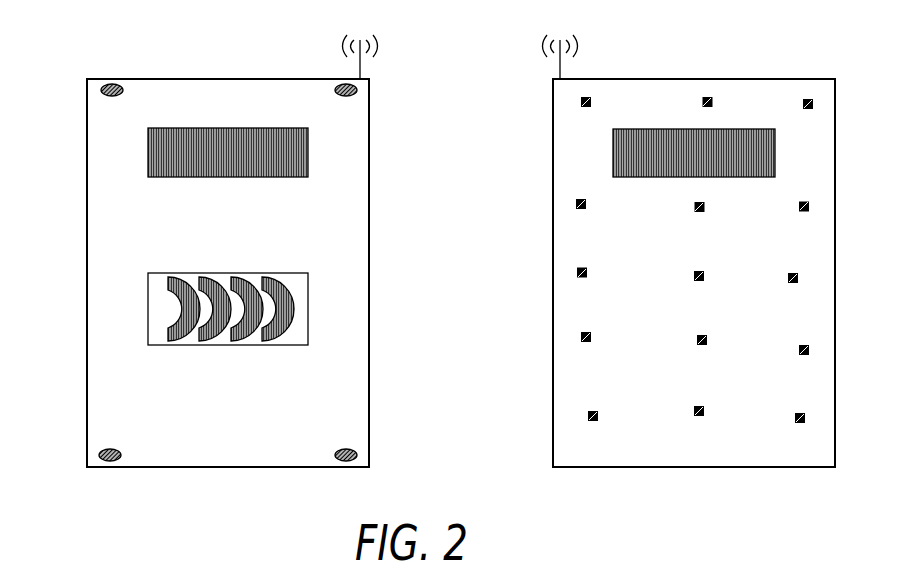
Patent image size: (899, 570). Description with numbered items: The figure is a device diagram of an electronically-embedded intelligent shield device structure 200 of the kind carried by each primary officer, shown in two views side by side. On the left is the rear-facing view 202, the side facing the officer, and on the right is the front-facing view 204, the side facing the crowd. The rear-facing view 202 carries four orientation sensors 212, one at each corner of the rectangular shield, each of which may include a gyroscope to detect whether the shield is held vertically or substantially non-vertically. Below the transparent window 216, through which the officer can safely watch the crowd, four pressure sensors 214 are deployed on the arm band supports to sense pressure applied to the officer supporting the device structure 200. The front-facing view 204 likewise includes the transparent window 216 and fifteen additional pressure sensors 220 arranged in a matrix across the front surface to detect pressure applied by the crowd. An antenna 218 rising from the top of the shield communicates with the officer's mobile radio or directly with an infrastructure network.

The intelligent shield device structure 200 is at (78, 26).
The rear-facing view 202 is at (228, 62).
The front-facing view 204 is at (744, 62).
The orientation sensors 212 is at (101, 111).
The pressure sensors 214 is at (222, 296).
The transparent window 216 is at (232, 128).
The antenna 218 is at (360, 67).
The pressure sensors 220 is at (594, 408).